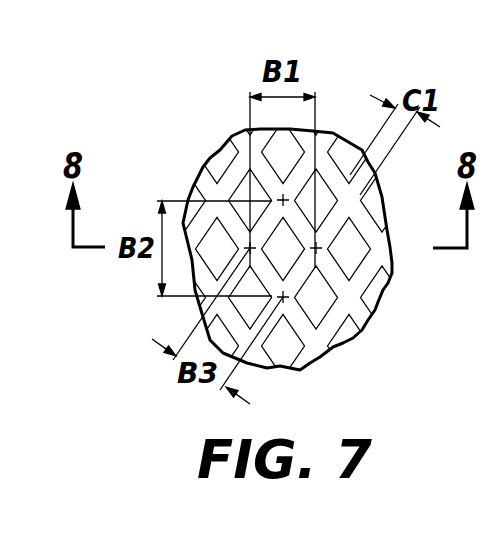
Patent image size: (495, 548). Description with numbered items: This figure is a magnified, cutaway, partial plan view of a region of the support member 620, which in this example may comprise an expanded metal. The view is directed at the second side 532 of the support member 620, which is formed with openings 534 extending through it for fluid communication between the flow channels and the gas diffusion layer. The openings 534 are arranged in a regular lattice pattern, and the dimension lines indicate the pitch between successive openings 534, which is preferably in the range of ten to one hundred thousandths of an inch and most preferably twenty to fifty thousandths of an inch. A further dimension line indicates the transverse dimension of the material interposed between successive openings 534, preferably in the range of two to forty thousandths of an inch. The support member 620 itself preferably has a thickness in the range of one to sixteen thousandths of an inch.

The support member 620 is at (238, 222).
The second side 532 is at (225, 120).
The openings 534 is at (240, 188).